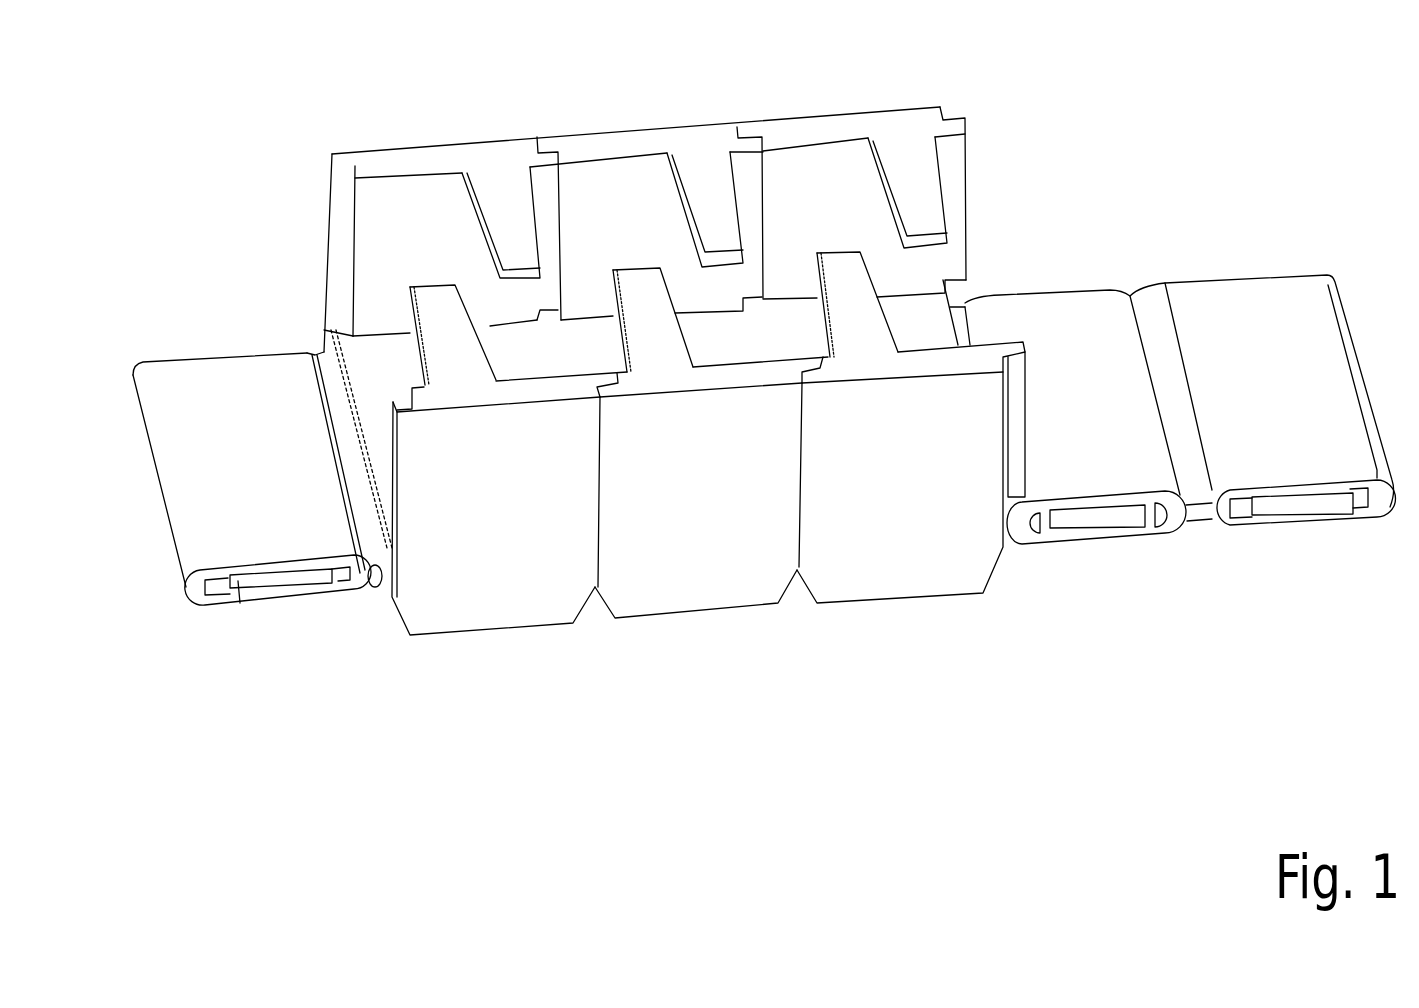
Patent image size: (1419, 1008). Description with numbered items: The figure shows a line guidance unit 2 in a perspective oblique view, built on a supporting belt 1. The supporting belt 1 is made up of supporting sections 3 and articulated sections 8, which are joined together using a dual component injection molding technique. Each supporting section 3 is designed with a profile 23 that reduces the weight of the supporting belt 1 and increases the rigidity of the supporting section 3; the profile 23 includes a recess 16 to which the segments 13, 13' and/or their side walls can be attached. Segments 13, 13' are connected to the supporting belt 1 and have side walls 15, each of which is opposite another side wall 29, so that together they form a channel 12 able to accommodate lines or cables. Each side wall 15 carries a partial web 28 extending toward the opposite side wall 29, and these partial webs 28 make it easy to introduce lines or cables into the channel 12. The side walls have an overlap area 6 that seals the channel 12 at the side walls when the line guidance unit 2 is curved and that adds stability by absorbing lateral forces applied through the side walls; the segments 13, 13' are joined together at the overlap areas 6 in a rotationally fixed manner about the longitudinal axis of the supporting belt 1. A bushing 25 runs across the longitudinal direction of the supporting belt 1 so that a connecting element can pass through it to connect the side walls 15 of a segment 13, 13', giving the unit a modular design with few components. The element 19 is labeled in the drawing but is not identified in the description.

The supporting belt 1 is at (1075, 266).
The line guidance unit 2 is at (412, 110).
The supporting section 3 is at (1073, 478).
The overlap area 6 is at (802, 372).
The articulated section 8 is at (1198, 516).
The channel 12 is at (503, 318).
The segment 13 is at (496, 565).
The segment 13' is at (698, 550).
The side wall 15 is at (453, 522).
The recess 16 is at (273, 582).
The connecting element 19 is at (380, 500).
The profile 23 is at (242, 586).
The bushing 25 is at (1303, 503).
The partial web 28 is at (495, 177).
The side wall 29 is at (388, 231).